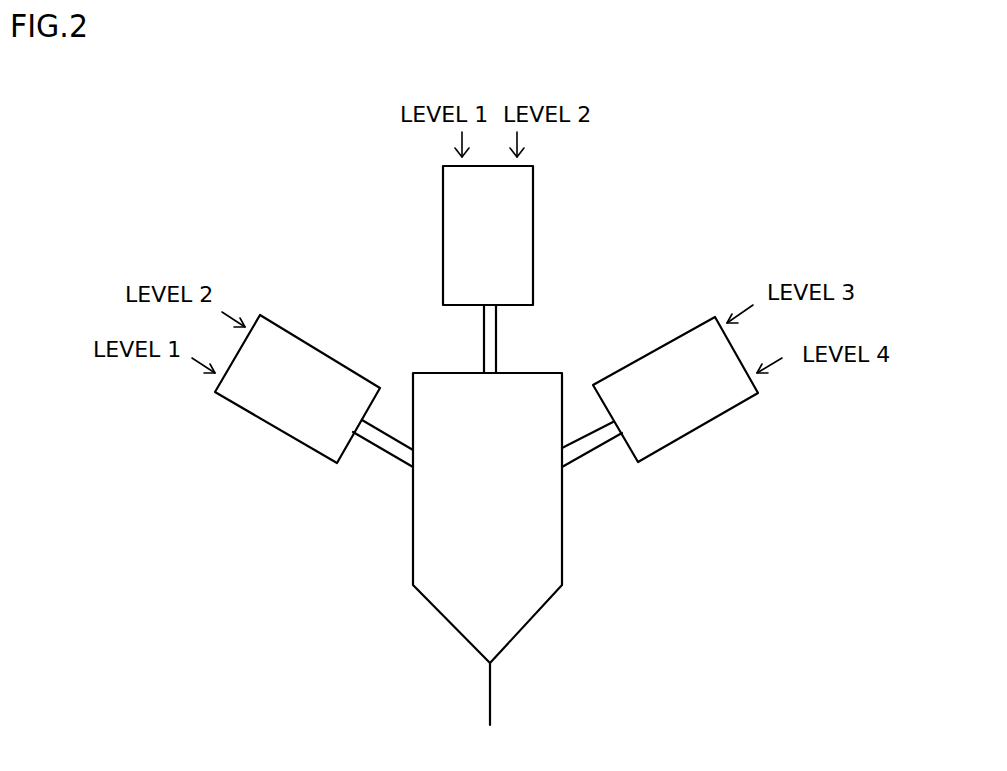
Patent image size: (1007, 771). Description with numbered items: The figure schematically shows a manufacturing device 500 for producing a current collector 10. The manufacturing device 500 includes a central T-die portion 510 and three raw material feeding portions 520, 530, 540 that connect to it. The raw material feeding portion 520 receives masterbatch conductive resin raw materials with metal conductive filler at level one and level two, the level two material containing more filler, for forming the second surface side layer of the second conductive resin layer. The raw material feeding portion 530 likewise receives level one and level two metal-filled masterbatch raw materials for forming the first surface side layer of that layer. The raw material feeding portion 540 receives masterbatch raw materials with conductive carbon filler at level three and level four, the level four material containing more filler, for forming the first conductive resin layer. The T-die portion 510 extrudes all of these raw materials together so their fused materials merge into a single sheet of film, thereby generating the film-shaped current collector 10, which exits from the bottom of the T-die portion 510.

The manufacturing device 500 is at (370, 653).
The T-die portion 510 is at (537, 613).
The raw material feeding portion 520 is at (307, 448).
The raw material feeding portion 530 is at (533, 257).
The raw material feeding portion 540 is at (690, 433).
The current collector 10 is at (490, 690).